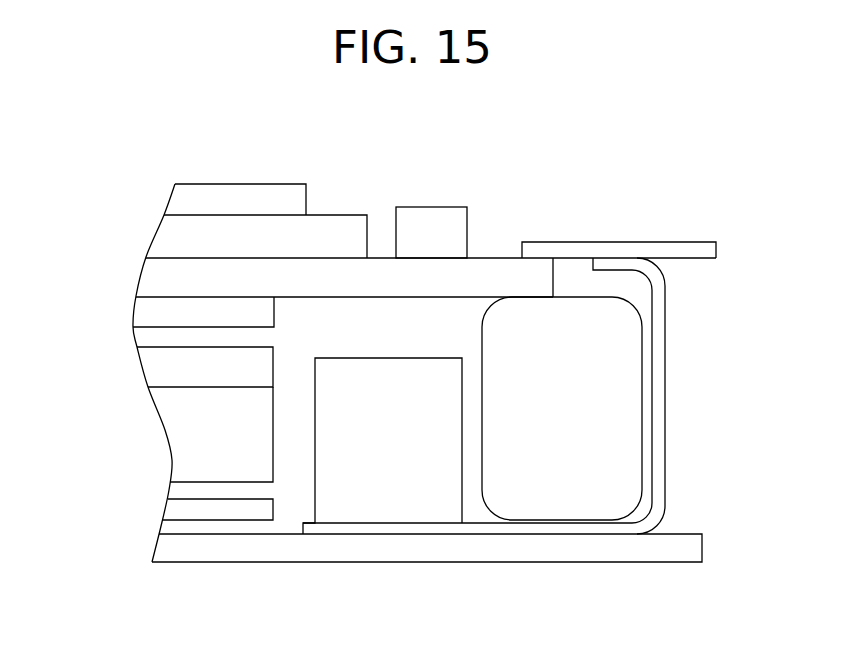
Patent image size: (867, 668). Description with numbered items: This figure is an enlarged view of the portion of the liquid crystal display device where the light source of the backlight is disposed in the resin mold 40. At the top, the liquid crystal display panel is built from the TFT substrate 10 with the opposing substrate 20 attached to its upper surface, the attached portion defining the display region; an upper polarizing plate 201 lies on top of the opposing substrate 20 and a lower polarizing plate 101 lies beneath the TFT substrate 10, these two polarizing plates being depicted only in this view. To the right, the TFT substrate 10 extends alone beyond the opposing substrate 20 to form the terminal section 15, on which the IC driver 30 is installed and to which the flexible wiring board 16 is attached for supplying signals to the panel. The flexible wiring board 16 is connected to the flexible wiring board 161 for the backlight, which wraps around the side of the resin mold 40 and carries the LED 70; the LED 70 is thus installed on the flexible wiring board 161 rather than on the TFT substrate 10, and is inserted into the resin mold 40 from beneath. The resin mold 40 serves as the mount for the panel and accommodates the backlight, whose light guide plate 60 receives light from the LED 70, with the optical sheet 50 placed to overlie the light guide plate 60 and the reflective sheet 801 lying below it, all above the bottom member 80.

The TFT substrate 10 is at (155, 274).
The lower polarizing plate 101 is at (145, 310).
The terminal section 15 is at (491, 258).
The flexible wiring board 16 is at (683, 250).
The flexible wiring board for the backlight 161 is at (660, 426).
The opposing substrate 20 is at (170, 236).
The upper polarizing plate 201 is at (183, 194).
The IC driver 30 is at (430, 218).
The resin mold 40 is at (602, 381).
The optical sheet 50 is at (152, 370).
The light guide plate 60 is at (180, 433).
The LED 70 is at (382, 487).
The base plate 80 is at (568, 548).
The reflective sheet 801 is at (172, 507).